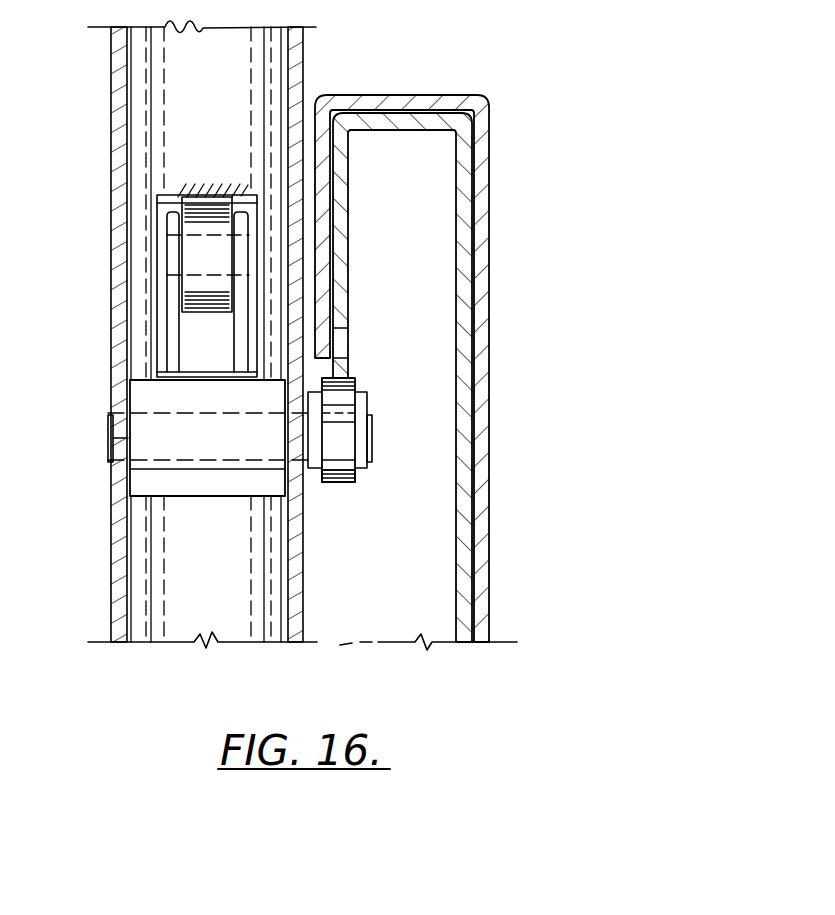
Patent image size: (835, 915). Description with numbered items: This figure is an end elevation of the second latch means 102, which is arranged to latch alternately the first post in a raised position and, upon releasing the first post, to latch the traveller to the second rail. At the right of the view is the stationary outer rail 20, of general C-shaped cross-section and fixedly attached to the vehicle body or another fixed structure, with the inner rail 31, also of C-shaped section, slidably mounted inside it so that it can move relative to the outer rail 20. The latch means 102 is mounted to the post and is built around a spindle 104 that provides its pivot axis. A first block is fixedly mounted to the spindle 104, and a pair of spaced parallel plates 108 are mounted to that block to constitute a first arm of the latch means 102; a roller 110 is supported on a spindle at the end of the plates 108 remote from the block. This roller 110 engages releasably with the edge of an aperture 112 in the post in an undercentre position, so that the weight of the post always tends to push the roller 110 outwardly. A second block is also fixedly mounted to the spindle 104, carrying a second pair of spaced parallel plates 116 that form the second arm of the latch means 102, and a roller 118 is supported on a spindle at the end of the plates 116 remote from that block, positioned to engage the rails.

The outer rail 20 is at (428, 102).
The inner rail 31 is at (362, 123).
The latch means 102 is at (128, 405).
The spindle 104 is at (117, 438).
The pair of spaced parallel plates 108 is at (175, 313).
The roller 110 is at (197, 258).
The aperture 112 is at (168, 205).
The pair of spaced parallel plates 116 is at (358, 463).
The roller 118 is at (329, 482).